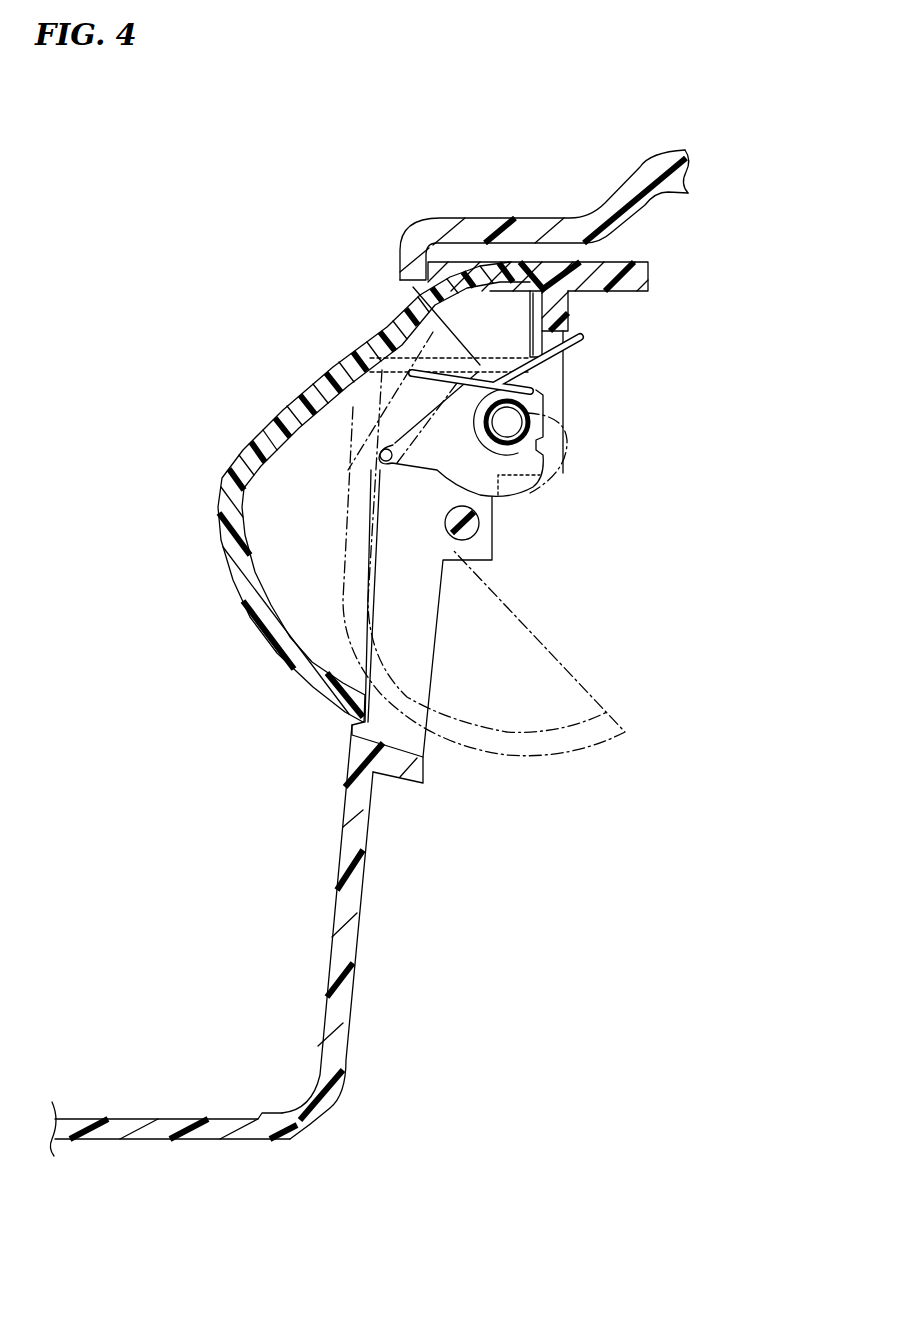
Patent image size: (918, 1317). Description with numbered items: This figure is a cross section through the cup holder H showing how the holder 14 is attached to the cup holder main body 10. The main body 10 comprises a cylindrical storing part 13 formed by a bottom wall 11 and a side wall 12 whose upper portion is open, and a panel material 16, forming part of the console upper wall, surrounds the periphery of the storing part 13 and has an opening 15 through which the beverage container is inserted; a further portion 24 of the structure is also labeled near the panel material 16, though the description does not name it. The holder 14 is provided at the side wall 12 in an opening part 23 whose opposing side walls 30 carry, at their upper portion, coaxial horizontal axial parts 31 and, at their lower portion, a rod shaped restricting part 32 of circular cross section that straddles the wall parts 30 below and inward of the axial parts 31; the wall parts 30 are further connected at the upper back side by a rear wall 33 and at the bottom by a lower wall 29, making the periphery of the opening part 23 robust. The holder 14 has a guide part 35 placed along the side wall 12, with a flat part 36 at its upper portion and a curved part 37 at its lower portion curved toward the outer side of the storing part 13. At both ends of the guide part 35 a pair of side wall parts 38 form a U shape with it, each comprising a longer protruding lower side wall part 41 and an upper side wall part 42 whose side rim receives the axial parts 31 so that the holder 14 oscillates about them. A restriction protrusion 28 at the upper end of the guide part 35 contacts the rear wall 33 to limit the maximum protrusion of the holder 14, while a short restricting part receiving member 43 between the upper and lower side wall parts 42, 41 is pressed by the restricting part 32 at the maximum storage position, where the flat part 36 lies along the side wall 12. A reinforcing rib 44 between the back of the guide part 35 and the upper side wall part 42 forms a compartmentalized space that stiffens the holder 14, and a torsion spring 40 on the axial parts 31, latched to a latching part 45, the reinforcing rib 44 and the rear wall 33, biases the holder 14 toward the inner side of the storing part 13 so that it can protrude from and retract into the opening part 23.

The cup holder main body 10 is at (274, 939).
The bottom wall 11 is at (125, 1119).
The side wall 12 is at (333, 913).
The storing part 13 is at (284, 492).
The holder 14 is at (546, 215).
The opening 15 is at (506, 207).
The panel material 16 is at (547, 218).
The opening part 23 is at (403, 745).
The plate portion 24 is at (548, 215).
The restriction protrusion 28 is at (538, 268).
The lower wall 29 is at (407, 775).
The side walls (opposing wall parts) of the opening part 30 is at (502, 587).
The axial part 31 is at (512, 426).
The restricting part 32 is at (470, 530).
The rear wall 33 is at (563, 310).
The guide part 35 is at (333, 492).
The flat part 36 is at (333, 366).
The curved part 37 is at (234, 598).
The side wall part 38 is at (429, 553).
The torsion spring 40 is at (543, 383).
The lower side wall part 41 is at (310, 617).
The upper side wall part 42 is at (457, 441).
The restricting part receiving member 43 is at (388, 452).
The reinforcing rib 44 is at (503, 347).
The latching part 45 is at (550, 375).
The cup holder H is at (289, 233).